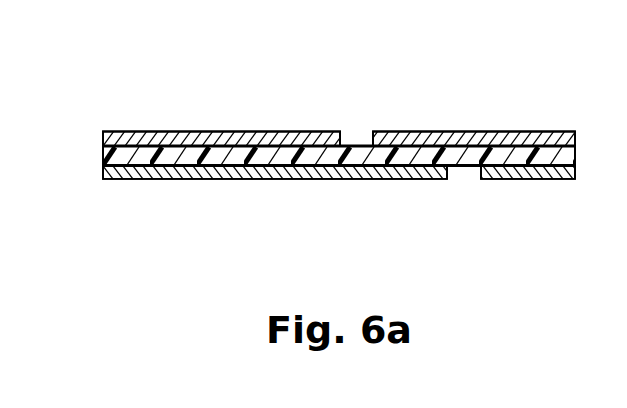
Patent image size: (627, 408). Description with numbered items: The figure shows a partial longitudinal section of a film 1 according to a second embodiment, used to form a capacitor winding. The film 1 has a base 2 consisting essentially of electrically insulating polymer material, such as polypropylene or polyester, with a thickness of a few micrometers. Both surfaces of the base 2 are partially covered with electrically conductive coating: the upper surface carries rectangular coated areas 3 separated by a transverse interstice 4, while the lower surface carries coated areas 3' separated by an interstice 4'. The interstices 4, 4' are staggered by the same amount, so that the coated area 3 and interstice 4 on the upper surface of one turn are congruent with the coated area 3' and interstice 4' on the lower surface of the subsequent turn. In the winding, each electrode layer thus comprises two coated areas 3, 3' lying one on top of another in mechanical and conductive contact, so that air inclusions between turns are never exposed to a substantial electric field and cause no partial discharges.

The film 1 is at (516, 117).
The base 2 is at (172, 155).
The coated area 3 is at (339, 103).
The coated area 3' is at (339, 210).
The interstice 4 is at (356, 103).
The interstice 4' is at (464, 210).